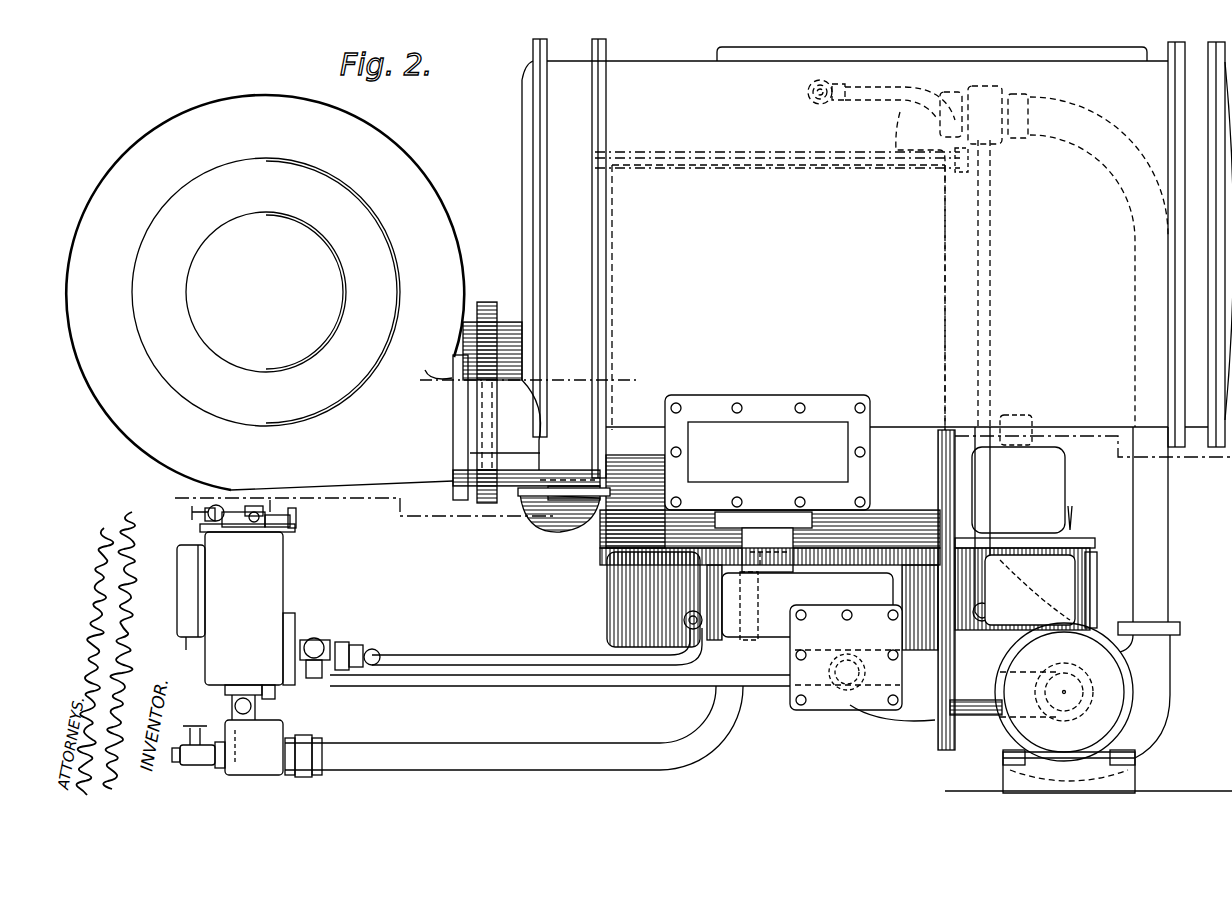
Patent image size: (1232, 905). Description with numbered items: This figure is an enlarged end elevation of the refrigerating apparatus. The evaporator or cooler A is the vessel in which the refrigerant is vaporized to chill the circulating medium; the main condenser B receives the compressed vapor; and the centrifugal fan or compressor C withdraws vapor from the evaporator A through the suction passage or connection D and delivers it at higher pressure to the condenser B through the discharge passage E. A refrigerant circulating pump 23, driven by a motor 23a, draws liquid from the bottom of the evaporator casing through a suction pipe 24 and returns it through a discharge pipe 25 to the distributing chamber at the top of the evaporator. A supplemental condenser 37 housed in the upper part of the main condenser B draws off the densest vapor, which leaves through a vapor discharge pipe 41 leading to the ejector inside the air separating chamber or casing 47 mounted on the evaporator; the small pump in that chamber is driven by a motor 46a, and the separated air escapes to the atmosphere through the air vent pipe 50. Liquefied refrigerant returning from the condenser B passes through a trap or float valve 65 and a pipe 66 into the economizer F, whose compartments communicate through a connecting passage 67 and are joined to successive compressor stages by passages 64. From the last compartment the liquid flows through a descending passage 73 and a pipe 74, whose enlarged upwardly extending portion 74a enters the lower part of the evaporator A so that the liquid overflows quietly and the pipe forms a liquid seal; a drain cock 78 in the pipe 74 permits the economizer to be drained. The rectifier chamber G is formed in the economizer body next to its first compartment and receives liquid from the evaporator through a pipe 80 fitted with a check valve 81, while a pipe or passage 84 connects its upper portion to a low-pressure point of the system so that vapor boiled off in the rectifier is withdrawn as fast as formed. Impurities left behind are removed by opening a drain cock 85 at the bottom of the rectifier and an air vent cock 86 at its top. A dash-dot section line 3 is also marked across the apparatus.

The centrifugal fan or compressor C is at (265, 292).
The main condenser B is at (826, 305).
The suction passage or connection D is at (526, 379).
The discharge passage E is at (532, 450).
The evaporator or cooler A is at (600, 520).
The economizer F is at (176, 577).
The rectifier chamber G is at (247, 604).
The section line 3 is at (691, 476).
The supplemental condenser 37 is at (1113, 60).
The vapor discharge pipe 41 is at (988, 498).
The motor 46a is at (1018, 474).
The air vent pipe 50 is at (1074, 514).
The air separating chamber or casing 47 is at (999, 590).
The discharge pipe 25 is at (1155, 546).
The refrigerant circulating pump 23 is at (1150, 690).
The motor 23a is at (1105, 718).
The suction pipe 24 is at (968, 716).
The trap or float valve 65 is at (880, 690).
The enlarged upwardly extending portion 74a is at (708, 584).
The pipe 80 is at (528, 655).
The check valve 81 is at (322, 645).
The connecting passage 67 is at (192, 628).
The pipe or passage 84 is at (232, 515).
The air vent cock 86 is at (262, 524).
The passages 64 is at (296, 515).
The descending passage 73 is at (268, 694).
The drain cock 85 is at (236, 707).
The pipe 74 is at (610, 752).
The pipe 66 is at (448, 678).
The drain cock 78 is at (198, 762).